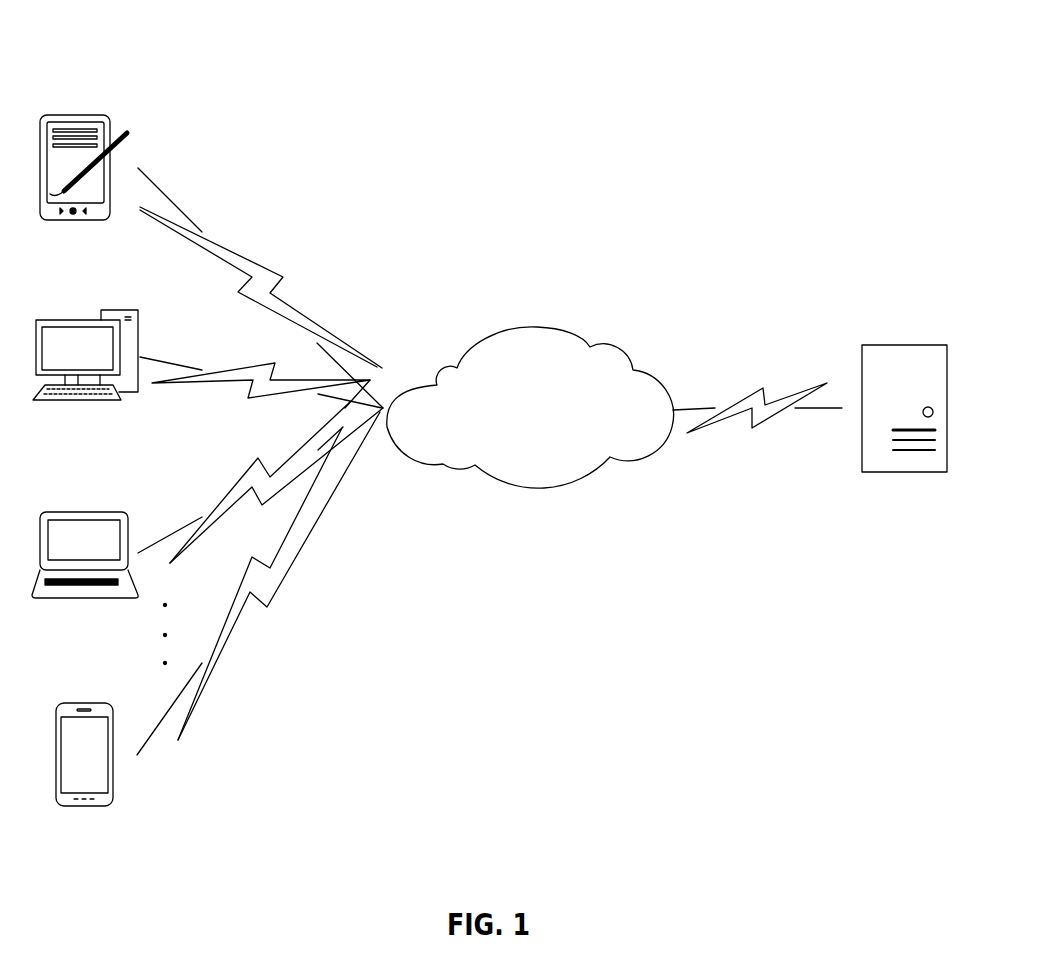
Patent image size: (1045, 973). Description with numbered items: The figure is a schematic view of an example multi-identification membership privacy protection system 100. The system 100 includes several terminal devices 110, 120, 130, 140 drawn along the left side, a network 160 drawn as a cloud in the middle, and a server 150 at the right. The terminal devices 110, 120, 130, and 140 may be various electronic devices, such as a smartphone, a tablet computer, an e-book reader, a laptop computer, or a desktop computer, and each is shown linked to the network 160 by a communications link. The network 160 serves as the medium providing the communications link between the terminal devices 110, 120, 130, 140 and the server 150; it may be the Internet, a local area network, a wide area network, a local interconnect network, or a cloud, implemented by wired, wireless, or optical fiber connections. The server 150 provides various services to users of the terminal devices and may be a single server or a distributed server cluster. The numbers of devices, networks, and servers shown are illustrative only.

The multi-identification membership privacy protection system 100 is at (562, 86).
The terminal device 110 is at (104, 117).
The terminal device 120 is at (68, 318).
The terminal device 130 is at (75, 512).
The terminal device 140 is at (82, 702).
The server 150 is at (910, 345).
The network 160 is at (552, 326).